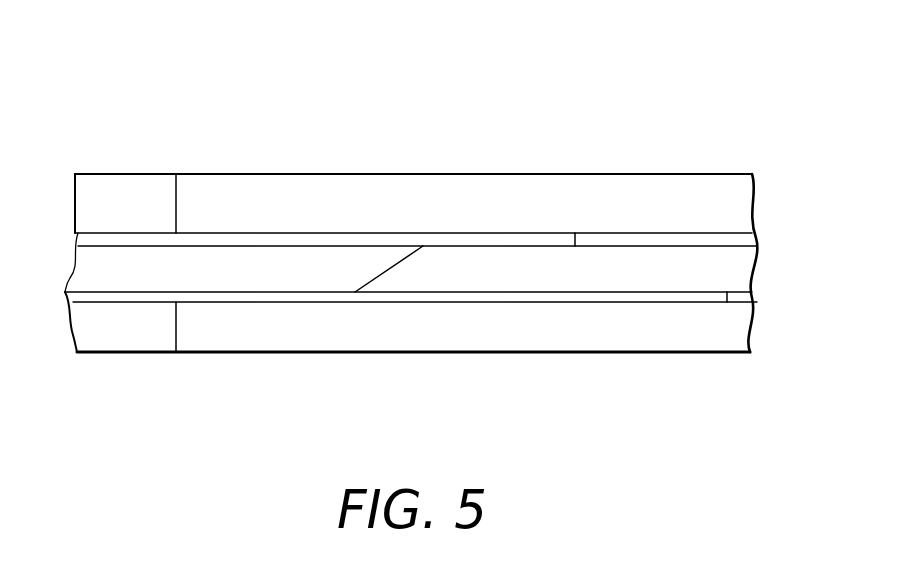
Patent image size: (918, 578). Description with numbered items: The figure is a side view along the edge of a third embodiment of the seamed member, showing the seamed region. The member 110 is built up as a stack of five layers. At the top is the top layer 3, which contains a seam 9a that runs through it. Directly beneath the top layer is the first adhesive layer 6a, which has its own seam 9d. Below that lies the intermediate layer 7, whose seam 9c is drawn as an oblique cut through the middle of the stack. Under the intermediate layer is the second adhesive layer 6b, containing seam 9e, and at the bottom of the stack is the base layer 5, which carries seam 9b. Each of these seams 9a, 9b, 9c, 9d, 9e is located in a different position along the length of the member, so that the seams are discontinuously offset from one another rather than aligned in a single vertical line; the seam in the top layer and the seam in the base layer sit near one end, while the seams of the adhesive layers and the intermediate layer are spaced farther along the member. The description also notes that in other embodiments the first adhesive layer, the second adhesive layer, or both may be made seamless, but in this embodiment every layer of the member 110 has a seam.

The member 110 is at (128, 101).
The top layer 3 is at (707, 187).
The base layer 5 is at (383, 342).
The first adhesive layer 6a is at (743, 242).
The second adhesive layer 6b is at (745, 298).
The intermediate layer 7 is at (725, 262).
The seam 9a is at (177, 203).
The seam 9b is at (176, 328).
The seam 9c is at (393, 268).
The seam 9d is at (575, 240).
The seam 9e is at (727, 301).